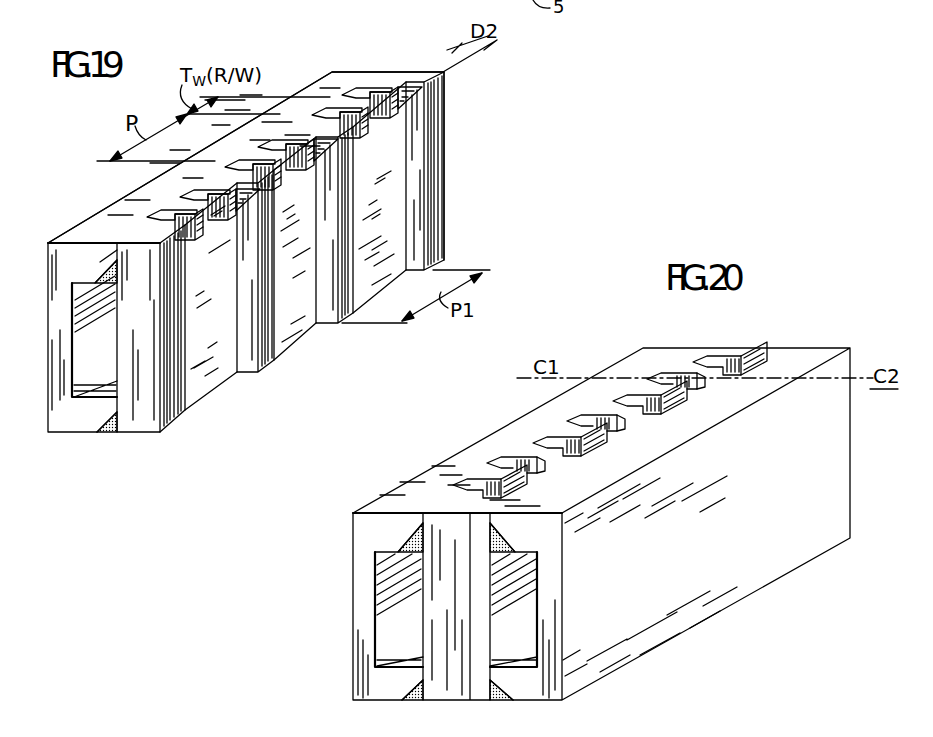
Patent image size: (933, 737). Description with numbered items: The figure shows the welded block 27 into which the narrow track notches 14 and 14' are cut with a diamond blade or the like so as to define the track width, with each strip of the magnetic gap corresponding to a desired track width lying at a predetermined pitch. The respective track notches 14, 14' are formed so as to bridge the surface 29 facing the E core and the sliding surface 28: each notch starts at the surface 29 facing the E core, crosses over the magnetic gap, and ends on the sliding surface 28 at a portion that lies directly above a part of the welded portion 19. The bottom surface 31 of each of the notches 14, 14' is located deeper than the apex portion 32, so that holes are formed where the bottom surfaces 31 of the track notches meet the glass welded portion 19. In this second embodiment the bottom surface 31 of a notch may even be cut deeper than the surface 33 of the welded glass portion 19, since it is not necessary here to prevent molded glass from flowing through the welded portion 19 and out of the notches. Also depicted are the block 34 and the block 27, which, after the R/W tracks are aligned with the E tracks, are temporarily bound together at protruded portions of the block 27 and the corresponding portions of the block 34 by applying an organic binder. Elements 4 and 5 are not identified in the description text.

In FIG. 19, the core block body 4 is at (57, 397).
In FIG. 19, the center pillar / rail 5 is at (149, 425).
In FIG. 19, the narrow track notch 14 is at (241, 220).
In FIG. 19, the narrow track notch 14' is at (192, 245).
In FIG. 19, the welded portion 19 is at (113, 276).
In FIG. 19, the welded block 27 is at (298, 311).
In FIG. 20, the welded block 27 is at (370, 690).
In FIG. 19, the sliding surface 28 is at (368, 52).
In FIG. 19, the surface facing the E core 29 is at (392, 185).
In FIG. 19, the bottom surface of notch 31 is at (362, 90).
In FIG. 19, the apex portion 32 is at (113, 260).
In FIG. 19, the bottom surface of welded glass portion 33 is at (105, 290).
In FIG. 20, the block 34 is at (547, 687).